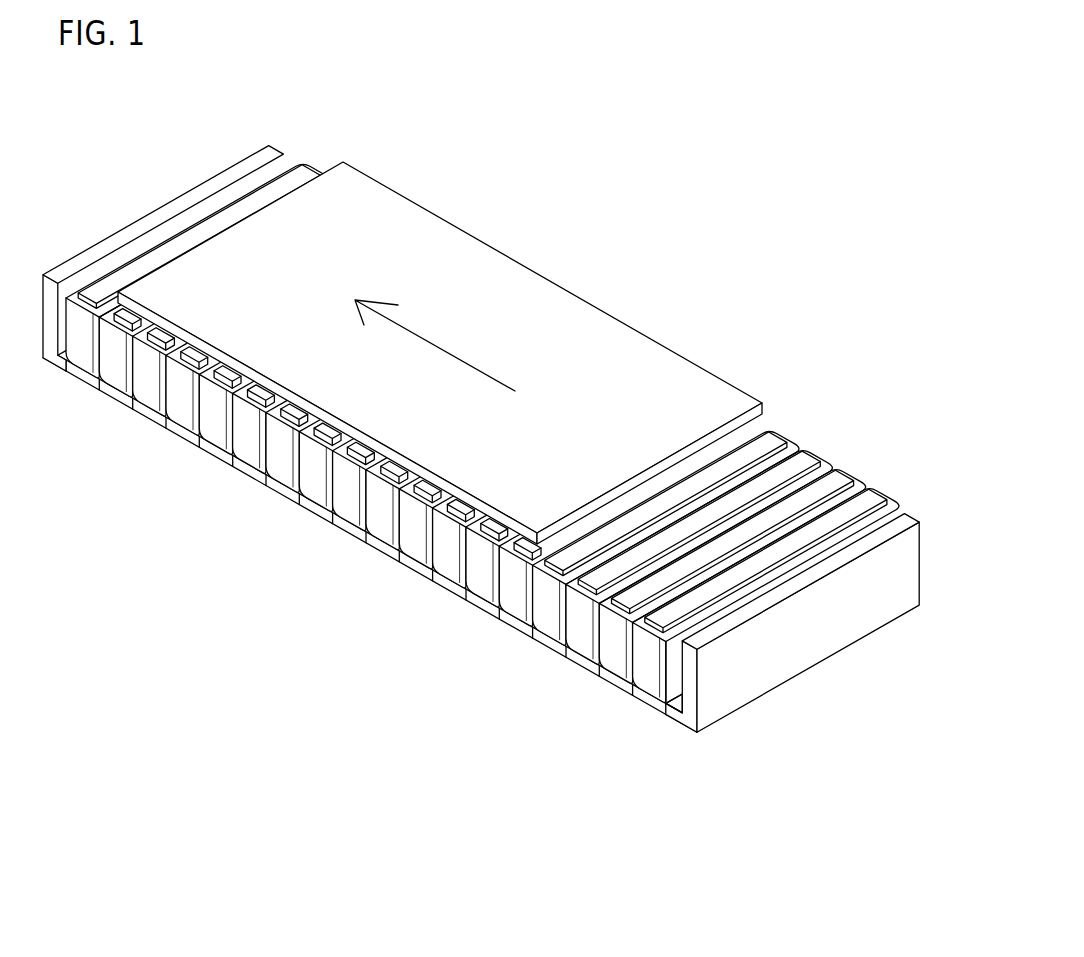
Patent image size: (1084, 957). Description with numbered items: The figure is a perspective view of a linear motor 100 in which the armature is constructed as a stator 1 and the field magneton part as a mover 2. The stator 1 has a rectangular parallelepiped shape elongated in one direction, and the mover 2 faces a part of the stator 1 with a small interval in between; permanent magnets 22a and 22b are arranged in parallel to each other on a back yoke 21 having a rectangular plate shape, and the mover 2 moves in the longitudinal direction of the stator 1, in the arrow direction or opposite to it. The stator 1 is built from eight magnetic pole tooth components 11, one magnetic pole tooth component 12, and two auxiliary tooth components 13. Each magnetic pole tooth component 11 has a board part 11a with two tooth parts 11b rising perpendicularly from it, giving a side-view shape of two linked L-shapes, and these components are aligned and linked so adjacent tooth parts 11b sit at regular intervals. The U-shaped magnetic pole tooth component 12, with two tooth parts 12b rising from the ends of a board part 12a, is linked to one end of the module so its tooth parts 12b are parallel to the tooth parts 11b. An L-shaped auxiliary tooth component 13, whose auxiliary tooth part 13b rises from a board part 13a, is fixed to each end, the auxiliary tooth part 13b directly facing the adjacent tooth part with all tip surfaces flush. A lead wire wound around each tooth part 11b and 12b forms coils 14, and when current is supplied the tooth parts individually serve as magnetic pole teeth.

The linear motor 100 is at (790, 142).
The stator 1 is at (505, 488).
The mover 2 is at (440, 350).
The back yoke 21 is at (424, 217).
The permanent magnet 22a is at (130, 330).
The permanent magnet 22b is at (163, 347).
The magnetic pole tooth component 11 is at (370, 567).
The board part 11a is at (570, 660).
The tooth part 11b is at (772, 425).
The magnetic pole tooth component 12 is at (365, 604).
The board part 12a is at (627, 690).
The tooth part 12b is at (857, 482).
The auxiliary tooth component 13 is at (505, 478).
The board part 13a is at (62, 370).
The auxiliary tooth part 13b is at (910, 514).
The coil 14 is at (790, 435).